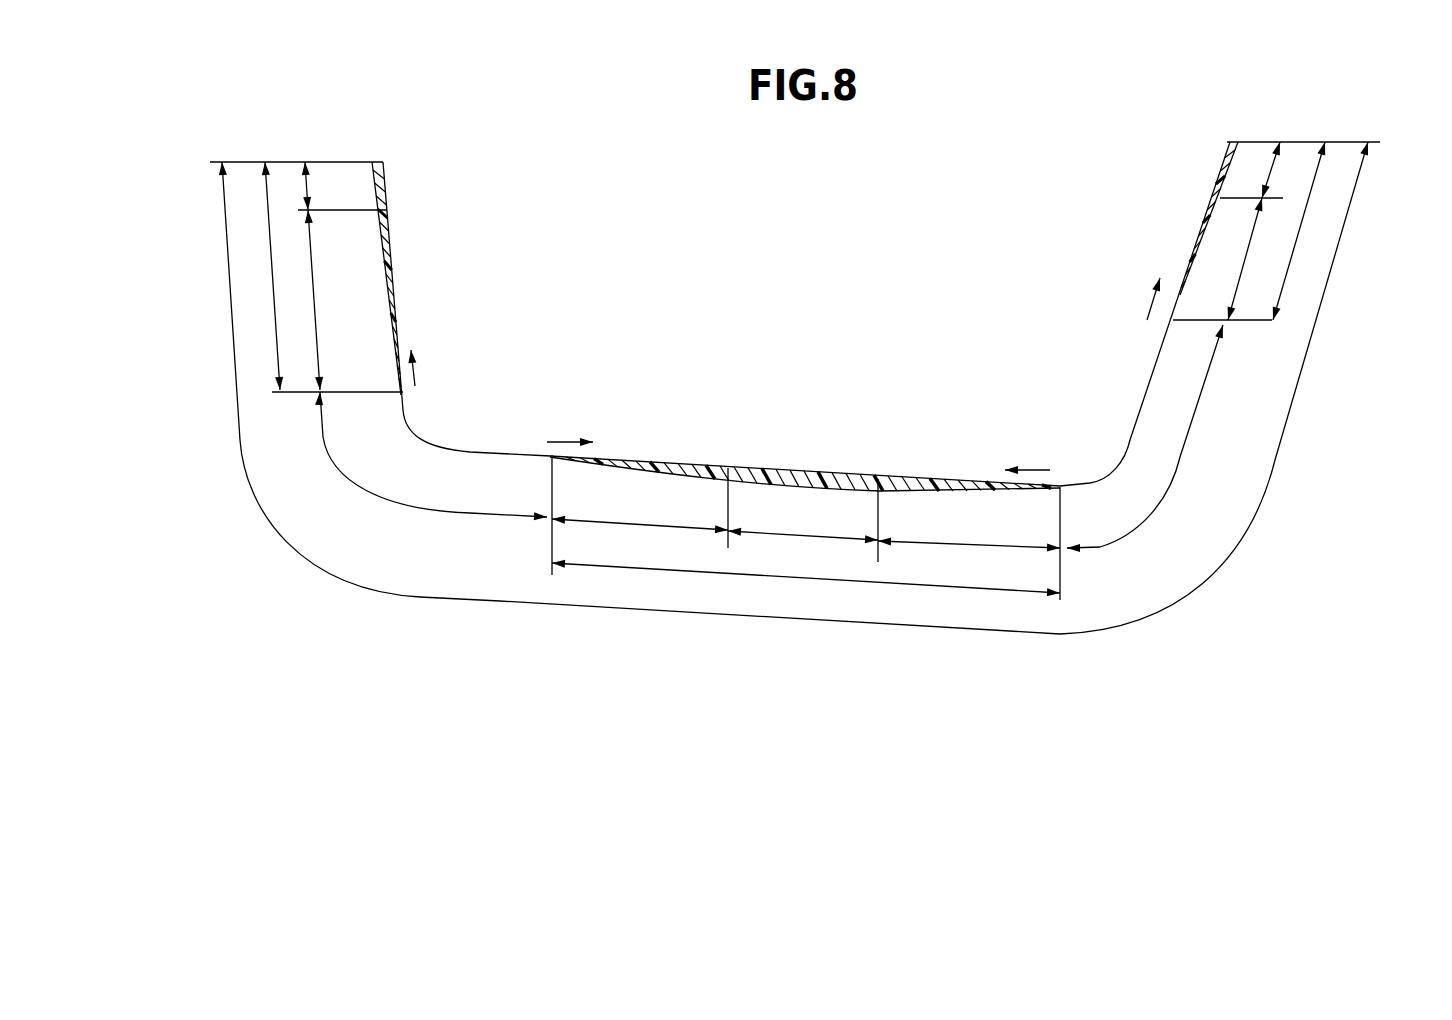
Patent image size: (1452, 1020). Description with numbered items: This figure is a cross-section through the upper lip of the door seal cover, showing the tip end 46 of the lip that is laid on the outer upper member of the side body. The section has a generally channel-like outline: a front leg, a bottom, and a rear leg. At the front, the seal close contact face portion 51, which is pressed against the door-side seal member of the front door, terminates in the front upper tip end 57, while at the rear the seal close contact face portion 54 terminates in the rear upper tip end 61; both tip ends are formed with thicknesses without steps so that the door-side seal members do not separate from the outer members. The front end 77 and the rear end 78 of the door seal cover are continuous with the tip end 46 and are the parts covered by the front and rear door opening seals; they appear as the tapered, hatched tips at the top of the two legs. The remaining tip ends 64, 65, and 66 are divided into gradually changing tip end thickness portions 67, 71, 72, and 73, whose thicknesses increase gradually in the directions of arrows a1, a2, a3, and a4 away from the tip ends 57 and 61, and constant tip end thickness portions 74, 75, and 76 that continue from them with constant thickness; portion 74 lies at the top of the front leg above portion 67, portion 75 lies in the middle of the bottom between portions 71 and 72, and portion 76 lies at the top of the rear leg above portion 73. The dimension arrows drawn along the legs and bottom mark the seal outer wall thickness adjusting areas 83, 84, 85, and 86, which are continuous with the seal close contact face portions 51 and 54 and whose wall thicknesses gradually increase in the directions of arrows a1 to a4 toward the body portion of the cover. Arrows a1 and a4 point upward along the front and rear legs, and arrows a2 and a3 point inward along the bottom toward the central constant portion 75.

The tip end portion of upper lip 46 is at (795, 621).
The seal close contact face portion 51 is at (431, 486).
The front upper tip end 57 is at (392, 504).
The seal close contact face portion 54 is at (1147, 464).
The rear upper tip end 61 is at (1157, 518).
The remaining tip end 64 is at (207, 276).
The seal outer wall thickness adjusting area 83 is at (272, 270).
The remaining tip end 66 is at (1356, 231).
The seal outer wall thickness adjusting area 86 is at (1303, 227).
The remaining tip end 65 is at (850, 582).
The gradually changing tip end thickness portion 67 is at (313, 290).
The gradually changing tip end thickness portion 71 is at (640, 515).
The seal outer wall thickness adjusting area 84 is at (640, 527).
The gradually changing tip end thickness portion 72 is at (969, 543).
The seal outer wall thickness adjusting area 85 is at (975, 545).
The gradually changing tip end thickness portion 73 is at (1240, 250).
The constant tip end thickness portion 74 is at (312, 185).
The constant tip end thickness portion 75 is at (815, 537).
The constant tip end thickness portion 76 is at (1273, 185).
The front end of door seal cover 77 is at (388, 177).
The rear end of door seal cover 78 is at (1223, 157).
The arrow a1 is at (430, 368).
The arrow a2 is at (570, 430).
The arrow a3 is at (1027, 454).
The arrow a4 is at (1138, 298).